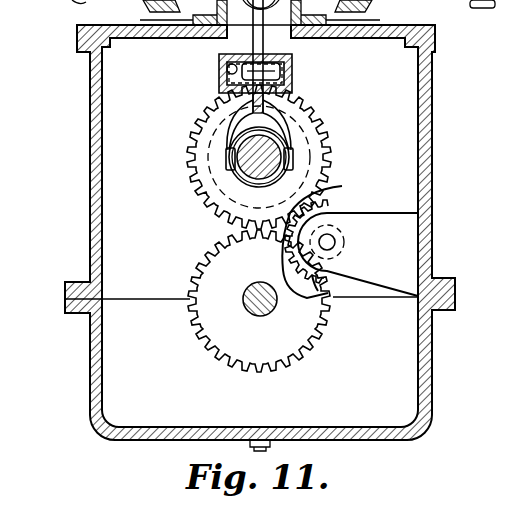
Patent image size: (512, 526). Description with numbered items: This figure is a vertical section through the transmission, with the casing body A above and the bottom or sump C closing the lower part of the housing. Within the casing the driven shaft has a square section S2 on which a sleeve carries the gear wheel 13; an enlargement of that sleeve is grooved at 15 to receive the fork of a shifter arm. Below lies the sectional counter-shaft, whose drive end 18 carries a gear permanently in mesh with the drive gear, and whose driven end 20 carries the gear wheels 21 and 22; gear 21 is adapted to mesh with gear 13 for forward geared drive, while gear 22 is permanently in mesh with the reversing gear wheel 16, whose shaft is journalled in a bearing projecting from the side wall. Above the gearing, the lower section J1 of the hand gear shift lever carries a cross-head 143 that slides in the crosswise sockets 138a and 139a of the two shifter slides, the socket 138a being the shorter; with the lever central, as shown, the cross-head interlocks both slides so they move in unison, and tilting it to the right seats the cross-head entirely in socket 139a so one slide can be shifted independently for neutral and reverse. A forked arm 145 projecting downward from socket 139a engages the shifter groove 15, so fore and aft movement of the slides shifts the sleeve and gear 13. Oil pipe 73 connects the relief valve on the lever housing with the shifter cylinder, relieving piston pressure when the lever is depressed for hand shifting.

The bottom or sump C is at (432, 356).
The casing body A is at (432, 174).
The oil pipe 73 is at (275, 11).
The lower section of hand gear shift lever J1 is at (268, 43).
The socket 138a is at (292, 82).
The socket 139a is at (218, 68).
The cross-head 143 is at (240, 84).
The gear wheel 13 is at (327, 131).
The forked arm 145 is at (218, 132).
The square section of driven shaft S2 is at (255, 170).
The shifter groove 15 is at (288, 172).
The reversing gear wheel 16 is at (335, 198).
The gear wheel 22 is at (313, 288).
The drive end of counter-shaft 18 is at (375, 220).
The gear wheel 21 is at (305, 345).
The driven end of counter-shaft 20 is at (262, 318).